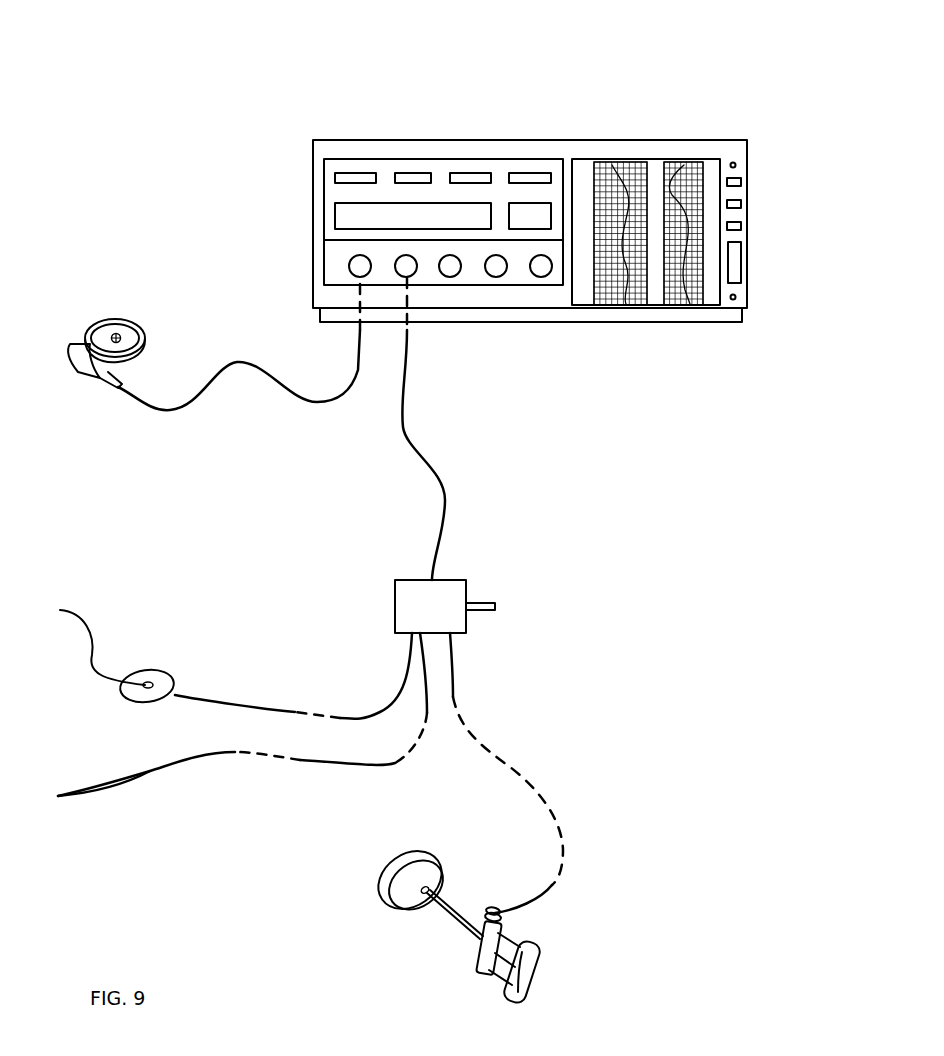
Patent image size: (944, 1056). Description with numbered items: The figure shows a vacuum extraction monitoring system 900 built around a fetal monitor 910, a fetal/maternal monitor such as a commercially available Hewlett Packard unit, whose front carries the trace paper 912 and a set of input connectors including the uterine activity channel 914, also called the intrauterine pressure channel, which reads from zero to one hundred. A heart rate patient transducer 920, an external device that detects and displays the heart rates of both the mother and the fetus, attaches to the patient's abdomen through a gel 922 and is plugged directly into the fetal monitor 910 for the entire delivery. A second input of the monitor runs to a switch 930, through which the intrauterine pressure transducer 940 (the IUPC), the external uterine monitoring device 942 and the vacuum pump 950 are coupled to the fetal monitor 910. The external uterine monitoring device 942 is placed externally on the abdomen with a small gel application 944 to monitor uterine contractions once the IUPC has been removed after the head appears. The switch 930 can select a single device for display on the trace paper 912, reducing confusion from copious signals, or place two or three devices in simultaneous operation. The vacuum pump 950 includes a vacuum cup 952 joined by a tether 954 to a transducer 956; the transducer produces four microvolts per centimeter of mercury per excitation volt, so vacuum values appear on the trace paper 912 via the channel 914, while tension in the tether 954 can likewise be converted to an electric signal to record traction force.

The vacuum extraction monitoring system 900 is at (268, 138).
The fetal monitor 910 is at (499, 148).
The trace paper 912 is at (645, 165).
The uterine activity channel 914 is at (413, 272).
The heart rate patient transducer 920 is at (118, 317).
The gel 922 is at (130, 340).
The switch 930 is at (447, 597).
The intrauterine pressure transducer 940 is at (100, 783).
The external uterine monitoring device 942 is at (148, 670).
The gel application 944 is at (81, 642).
The vacuum pump 950 is at (594, 901).
The vacuum cup 952 is at (387, 913).
The tether 954 is at (450, 915).
The transducer 956 is at (488, 910).